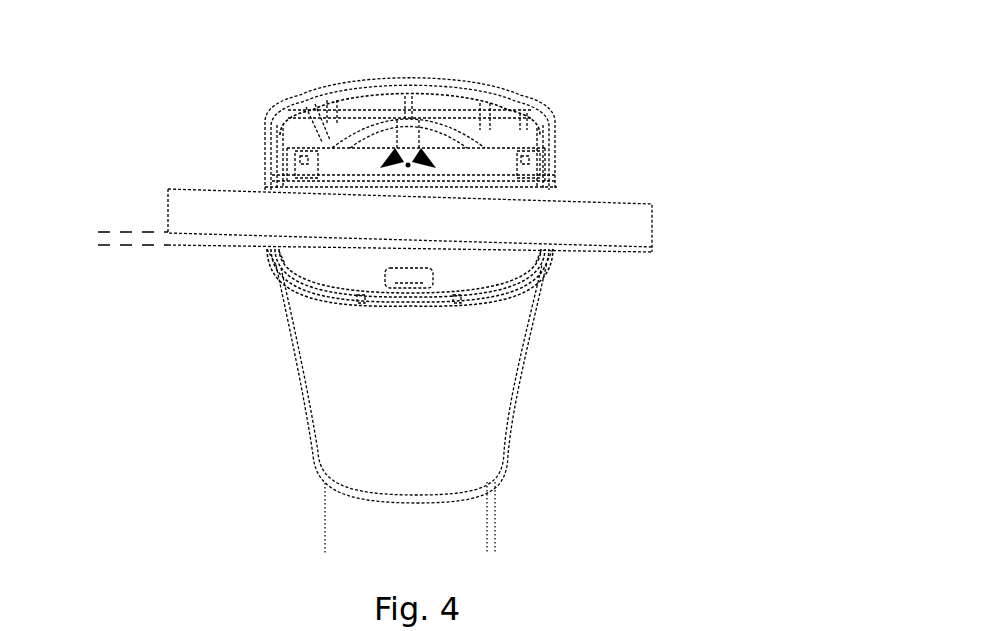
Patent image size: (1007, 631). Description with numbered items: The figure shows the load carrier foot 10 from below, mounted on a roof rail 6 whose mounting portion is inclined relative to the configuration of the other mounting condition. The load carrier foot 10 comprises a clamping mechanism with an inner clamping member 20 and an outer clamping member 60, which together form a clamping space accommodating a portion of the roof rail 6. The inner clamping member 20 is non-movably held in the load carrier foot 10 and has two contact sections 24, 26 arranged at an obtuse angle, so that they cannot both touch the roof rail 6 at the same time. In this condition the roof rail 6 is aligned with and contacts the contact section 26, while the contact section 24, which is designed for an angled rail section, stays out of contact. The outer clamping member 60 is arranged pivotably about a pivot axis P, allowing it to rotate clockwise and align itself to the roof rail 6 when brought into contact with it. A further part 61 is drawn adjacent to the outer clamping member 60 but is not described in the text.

The device 10 is at (612, 93).
The mounting plate 6 is at (593, 218).
The holder 20 is at (482, 268).
The first contact region 24 is at (322, 226).
The second contact region 26 is at (497, 228).
The upper housing frame 60 is at (337, 168).
The lower housing part 61 is at (477, 187).
The pivot point P is at (410, 160).